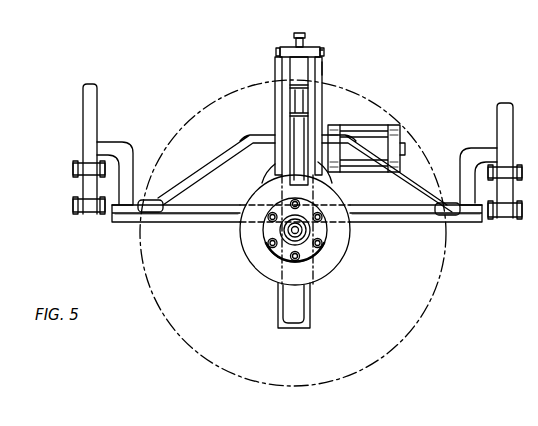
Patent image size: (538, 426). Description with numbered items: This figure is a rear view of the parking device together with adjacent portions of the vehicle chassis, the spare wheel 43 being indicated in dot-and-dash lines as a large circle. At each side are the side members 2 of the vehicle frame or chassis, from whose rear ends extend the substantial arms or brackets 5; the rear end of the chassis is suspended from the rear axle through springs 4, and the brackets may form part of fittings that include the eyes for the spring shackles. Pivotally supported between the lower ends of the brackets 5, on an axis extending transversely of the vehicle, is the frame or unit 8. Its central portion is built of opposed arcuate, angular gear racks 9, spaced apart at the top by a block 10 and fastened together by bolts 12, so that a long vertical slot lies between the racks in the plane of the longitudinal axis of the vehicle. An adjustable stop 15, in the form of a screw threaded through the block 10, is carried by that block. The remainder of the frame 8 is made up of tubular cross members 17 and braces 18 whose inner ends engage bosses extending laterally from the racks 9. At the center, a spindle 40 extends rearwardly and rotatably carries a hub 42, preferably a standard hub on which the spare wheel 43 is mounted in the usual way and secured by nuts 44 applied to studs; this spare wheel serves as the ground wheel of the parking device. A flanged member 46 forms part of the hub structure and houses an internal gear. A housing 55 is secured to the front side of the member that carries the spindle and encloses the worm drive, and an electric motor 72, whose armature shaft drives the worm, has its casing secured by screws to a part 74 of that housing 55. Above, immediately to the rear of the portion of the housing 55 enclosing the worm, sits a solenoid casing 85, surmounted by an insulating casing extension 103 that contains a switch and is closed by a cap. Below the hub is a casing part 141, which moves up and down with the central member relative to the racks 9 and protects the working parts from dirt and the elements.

The side members of the frame or chassis 2 is at (88, 92).
The springs 4 is at (86, 214).
The arms or brackets 5 is at (127, 147).
The frame or unit 8 is at (216, 160).
The arcuate, angular gear racks 9 is at (280, 90).
The block 10 is at (294, 47).
The bolts 12 is at (322, 52).
The adjustable stop 15 is at (302, 34).
The tubular cross members 17 is at (202, 223).
The braces 18 is at (206, 156).
The spindle 40 is at (322, 244).
The hub 42 is at (268, 262).
The spare wheel 43 is at (416, 332).
The nuts 44 is at (312, 270).
The flanged member 46 is at (242, 262).
The housing 55 is at (262, 175).
The electric motor 72 is at (376, 134).
The part of the housing 74 is at (338, 126).
The solenoid casing 85 is at (298, 130).
The casing extension 103 is at (322, 70).
The casing part 141 is at (306, 298).